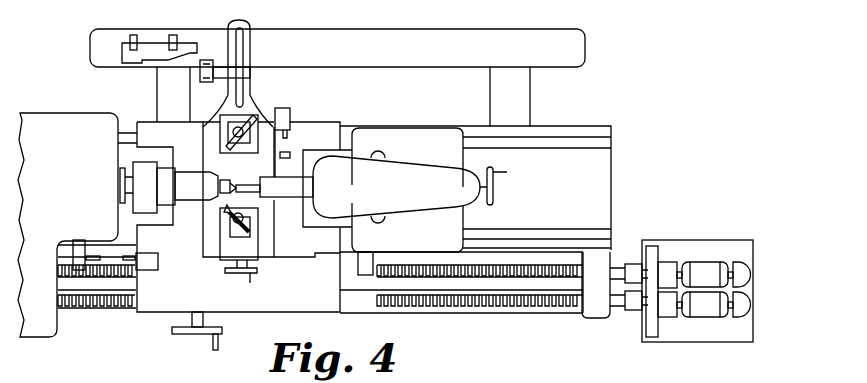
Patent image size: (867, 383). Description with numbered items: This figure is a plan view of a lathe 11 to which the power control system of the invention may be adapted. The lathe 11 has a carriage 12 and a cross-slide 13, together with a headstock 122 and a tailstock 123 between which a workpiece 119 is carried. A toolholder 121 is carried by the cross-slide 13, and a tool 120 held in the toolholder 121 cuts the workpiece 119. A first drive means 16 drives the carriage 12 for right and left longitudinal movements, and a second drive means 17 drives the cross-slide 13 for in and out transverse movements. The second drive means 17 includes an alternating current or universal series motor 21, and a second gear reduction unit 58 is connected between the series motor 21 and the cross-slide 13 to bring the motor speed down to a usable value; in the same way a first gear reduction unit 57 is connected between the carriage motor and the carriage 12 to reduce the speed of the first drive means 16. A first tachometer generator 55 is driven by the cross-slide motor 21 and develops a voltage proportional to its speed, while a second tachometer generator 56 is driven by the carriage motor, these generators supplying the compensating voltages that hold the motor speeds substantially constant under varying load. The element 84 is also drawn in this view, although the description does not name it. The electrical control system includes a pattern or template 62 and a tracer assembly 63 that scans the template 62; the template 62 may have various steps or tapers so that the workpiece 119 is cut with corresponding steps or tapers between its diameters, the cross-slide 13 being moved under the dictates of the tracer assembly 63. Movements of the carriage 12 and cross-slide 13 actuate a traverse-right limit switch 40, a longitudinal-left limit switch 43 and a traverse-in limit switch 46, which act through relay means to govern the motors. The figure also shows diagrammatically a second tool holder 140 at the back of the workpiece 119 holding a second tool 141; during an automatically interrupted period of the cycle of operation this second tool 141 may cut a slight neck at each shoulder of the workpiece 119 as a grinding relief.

The lathe 11 is at (104, 151).
The carriage 12 is at (330, 124).
The cross-slide 13 is at (251, 58).
The first drive means 16 is at (734, 367).
The second drive means 17 is at (724, 232).
The series motor 21 is at (714, 268).
The traverse-right limit switch 40 is at (367, 248).
The longitudinal-left limit switch 43 is at (78, 252).
The traverse-in limit switch 46 is at (288, 112).
The first tachometer generator 55 is at (745, 272).
The second tachometer generator 56 is at (745, 306).
The first gear reduction unit 57 is at (662, 316).
The second gear reduction unit 58 is at (661, 264).
The pattern or template 62 is at (152, 48).
The tracer assembly 63 is at (209, 81).
The valve spool 84 is at (718, 316).
The workpiece 119 is at (190, 167).
The tool 120 is at (227, 210).
The toolholder 121 is at (239, 245).
The headstock 122 is at (137, 203).
The tailstock 123 is at (285, 188).
The second tool holder 140 is at (245, 146).
The second tool 141 is at (222, 138).